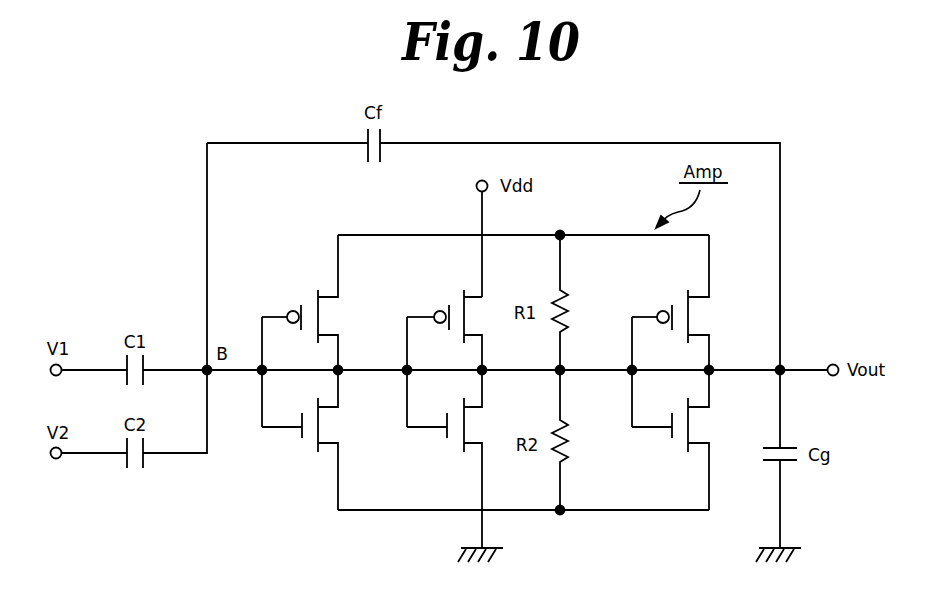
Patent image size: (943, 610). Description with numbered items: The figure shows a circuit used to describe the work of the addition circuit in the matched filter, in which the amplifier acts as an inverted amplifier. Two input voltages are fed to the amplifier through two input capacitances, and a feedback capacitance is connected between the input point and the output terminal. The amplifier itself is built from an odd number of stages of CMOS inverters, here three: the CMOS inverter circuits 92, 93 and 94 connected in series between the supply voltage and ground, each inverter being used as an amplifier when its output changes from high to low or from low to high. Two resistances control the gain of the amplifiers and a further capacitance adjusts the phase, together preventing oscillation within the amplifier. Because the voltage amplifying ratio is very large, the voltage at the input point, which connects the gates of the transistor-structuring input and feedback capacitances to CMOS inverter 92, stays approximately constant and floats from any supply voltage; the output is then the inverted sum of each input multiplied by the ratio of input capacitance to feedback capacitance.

The CMOS inverter circuit 92 is at (290, 380).
The CMOS inverter circuit 93 is at (435, 380).
The CMOS inverter circuit 94 is at (656, 380).